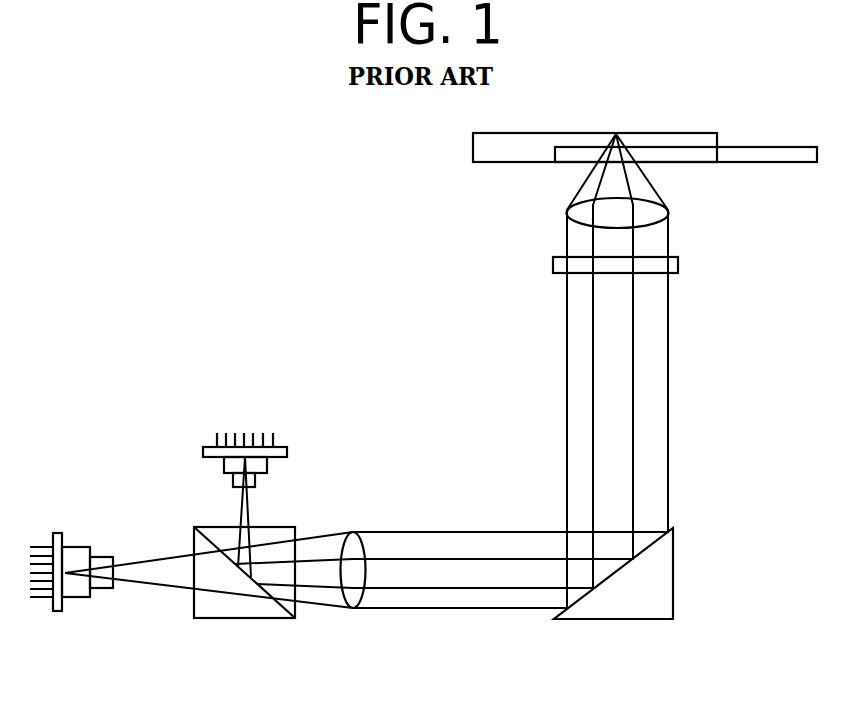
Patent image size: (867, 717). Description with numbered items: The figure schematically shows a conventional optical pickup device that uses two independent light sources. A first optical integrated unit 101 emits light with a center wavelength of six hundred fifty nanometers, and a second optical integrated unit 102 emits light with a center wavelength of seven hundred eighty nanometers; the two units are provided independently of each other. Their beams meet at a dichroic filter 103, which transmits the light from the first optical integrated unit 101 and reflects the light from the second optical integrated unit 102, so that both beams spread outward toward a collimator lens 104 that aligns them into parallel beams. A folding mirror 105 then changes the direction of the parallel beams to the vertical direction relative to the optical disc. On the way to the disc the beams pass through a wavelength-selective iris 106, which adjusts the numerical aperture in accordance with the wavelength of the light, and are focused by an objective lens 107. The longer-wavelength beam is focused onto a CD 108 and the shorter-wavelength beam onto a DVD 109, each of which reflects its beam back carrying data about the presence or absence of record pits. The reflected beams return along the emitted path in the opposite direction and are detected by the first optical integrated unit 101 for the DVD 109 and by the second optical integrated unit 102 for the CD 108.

The first optical integrated unit 101 is at (77, 546).
The second optical integrated unit 102 is at (223, 461).
The dichroic filter 103 is at (242, 612).
The collimator lens 104 is at (347, 610).
The folding mirror 105 is at (622, 622).
The wavelength-selective iris 106 is at (553, 263).
The objective lens 107 is at (566, 211).
The CD 108 is at (488, 149).
The DVD 109 is at (757, 162).